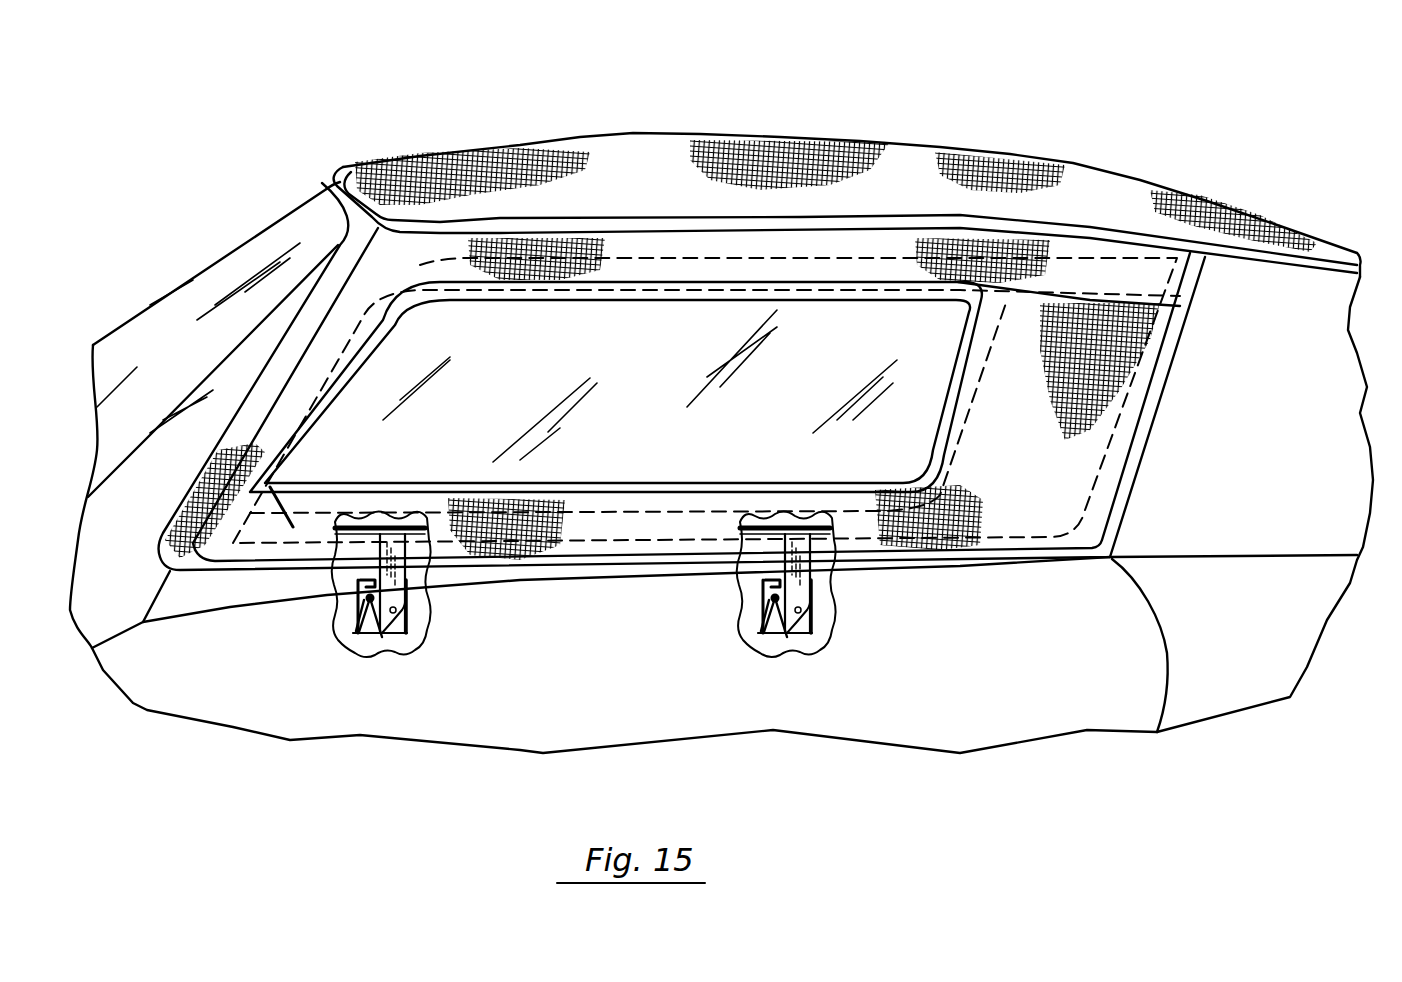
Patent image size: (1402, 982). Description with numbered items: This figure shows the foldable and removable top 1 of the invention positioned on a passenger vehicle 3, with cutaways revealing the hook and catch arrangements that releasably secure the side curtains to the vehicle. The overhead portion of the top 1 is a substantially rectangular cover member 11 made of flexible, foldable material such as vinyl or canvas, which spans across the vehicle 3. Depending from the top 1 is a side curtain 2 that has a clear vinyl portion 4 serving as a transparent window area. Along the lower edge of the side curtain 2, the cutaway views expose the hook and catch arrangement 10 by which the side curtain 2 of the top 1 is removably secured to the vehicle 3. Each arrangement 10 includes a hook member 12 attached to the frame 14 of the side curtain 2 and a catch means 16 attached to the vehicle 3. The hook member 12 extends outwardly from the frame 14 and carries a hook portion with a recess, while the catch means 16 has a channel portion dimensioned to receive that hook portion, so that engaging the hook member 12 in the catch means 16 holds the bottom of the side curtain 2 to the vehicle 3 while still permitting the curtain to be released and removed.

The foldable and removable top 1 is at (1078, 112).
The side curtain 2 is at (1058, 470).
The passenger vehicle 3 is at (590, 695).
The clear vinyl portion 4 is at (640, 433).
The hook and catch arrangement 10 is at (320, 630).
The cover member 11 is at (790, 122).
The hook member 12 is at (383, 555).
The frame 14 is at (367, 527).
The catch means 16 is at (413, 613).